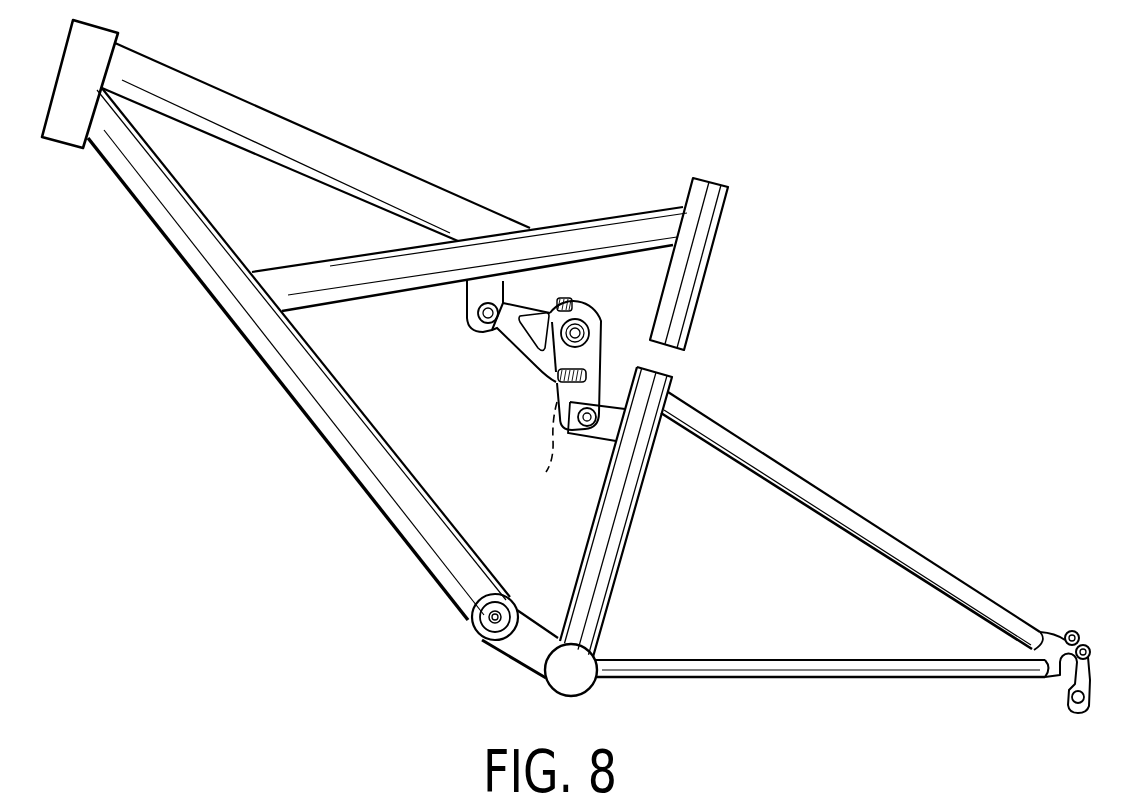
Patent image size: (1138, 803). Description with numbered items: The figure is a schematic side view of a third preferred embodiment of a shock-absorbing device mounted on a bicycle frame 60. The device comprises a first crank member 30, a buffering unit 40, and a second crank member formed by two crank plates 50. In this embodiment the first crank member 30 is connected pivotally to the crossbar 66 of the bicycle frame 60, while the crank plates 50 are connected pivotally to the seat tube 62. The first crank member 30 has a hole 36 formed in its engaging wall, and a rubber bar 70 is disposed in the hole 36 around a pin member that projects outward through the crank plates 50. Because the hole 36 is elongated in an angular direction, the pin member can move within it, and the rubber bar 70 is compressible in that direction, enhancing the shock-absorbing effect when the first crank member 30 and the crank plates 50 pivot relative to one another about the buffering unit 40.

The first crank member 30 is at (538, 292).
The hole 36 is at (570, 387).
The buffering unit 40 is at (600, 312).
The crank plates 50 is at (606, 362).
The bicycle frame 60 is at (288, 422).
The seat tube 62 is at (612, 533).
The crossbar 66 is at (482, 250).
The rubber bar 70 is at (536, 459).